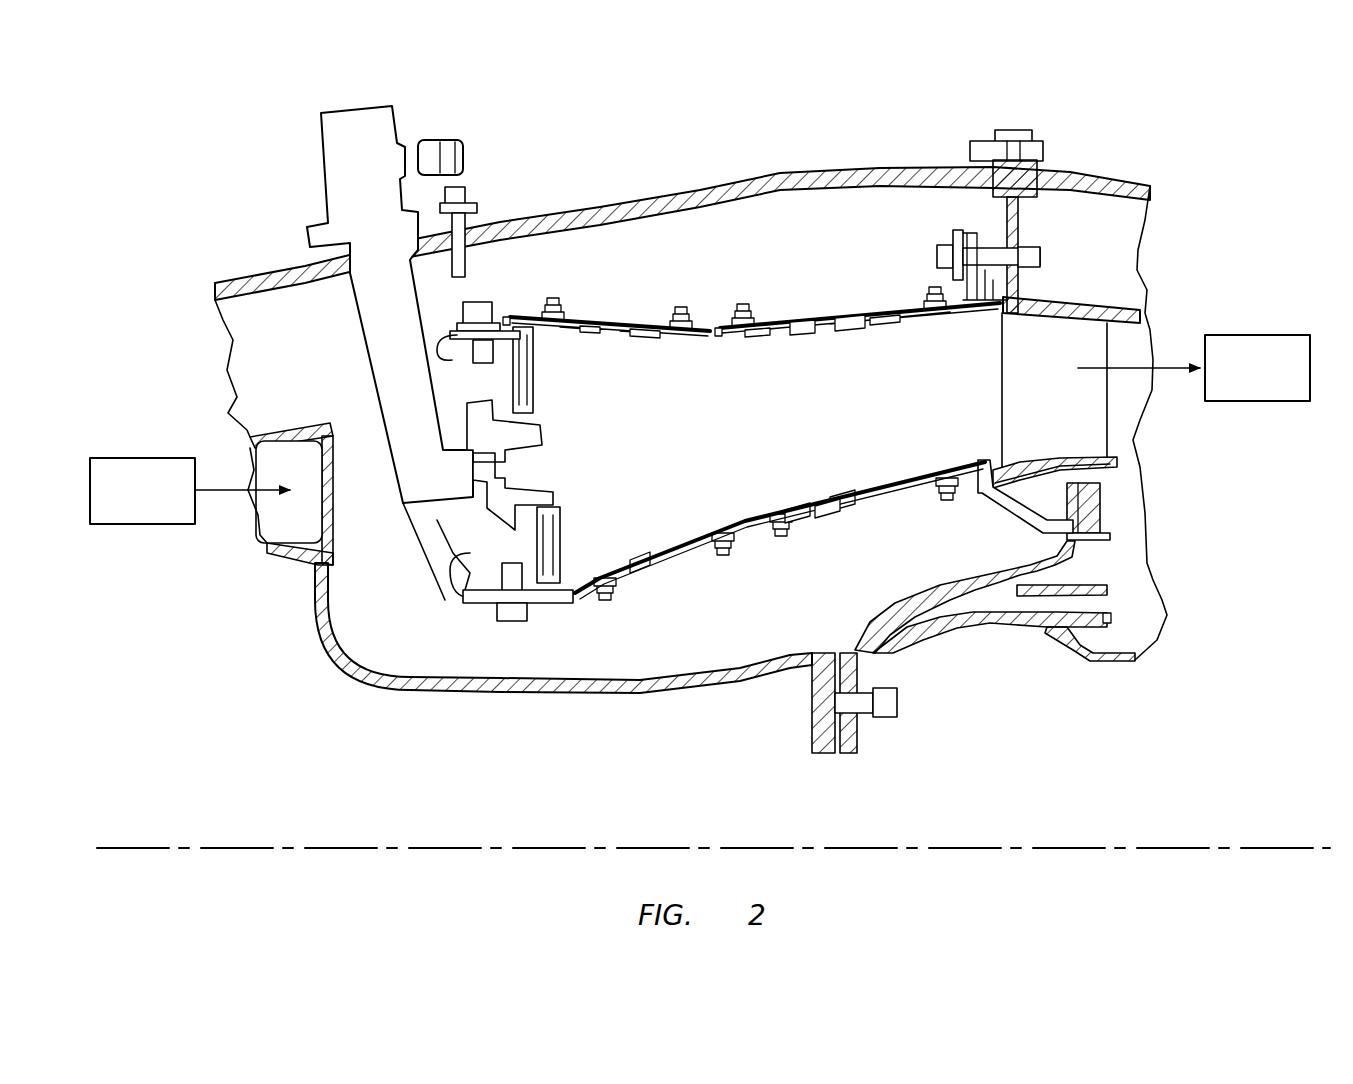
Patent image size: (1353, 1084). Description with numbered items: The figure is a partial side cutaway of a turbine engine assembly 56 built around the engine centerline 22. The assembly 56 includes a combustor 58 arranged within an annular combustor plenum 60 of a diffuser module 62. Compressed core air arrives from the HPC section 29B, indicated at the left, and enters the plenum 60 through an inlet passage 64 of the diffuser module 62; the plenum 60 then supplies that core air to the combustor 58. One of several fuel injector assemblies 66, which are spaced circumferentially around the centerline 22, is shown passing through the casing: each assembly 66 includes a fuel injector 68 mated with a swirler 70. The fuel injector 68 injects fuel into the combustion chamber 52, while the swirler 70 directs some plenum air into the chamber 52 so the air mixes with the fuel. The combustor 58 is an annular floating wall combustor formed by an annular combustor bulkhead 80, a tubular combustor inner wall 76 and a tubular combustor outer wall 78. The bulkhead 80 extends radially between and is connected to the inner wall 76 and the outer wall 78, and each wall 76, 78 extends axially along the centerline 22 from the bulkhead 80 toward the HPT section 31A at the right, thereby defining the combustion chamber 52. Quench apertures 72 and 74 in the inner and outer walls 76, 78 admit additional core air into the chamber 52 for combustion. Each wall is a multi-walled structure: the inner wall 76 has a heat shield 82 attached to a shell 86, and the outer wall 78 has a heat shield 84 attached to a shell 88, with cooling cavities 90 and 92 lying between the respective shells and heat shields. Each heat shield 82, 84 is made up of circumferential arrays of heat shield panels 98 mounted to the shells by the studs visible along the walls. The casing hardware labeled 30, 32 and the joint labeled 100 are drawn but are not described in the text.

The centerline 22 is at (1074, 845).
The HPC section 29B is at (172, 506).
The combustor section 30 is at (842, 151).
The HPT section 31A is at (1284, 384).
The fastener assembly 32 is at (1072, 160).
The combustion chamber 52 is at (782, 451).
The turbine engine assembly 56 is at (638, 150).
The combustor 58 is at (612, 311).
The combustor plenum 60 is at (862, 229).
The diffuser module 62 is at (316, 628).
The inlet passage 64 is at (275, 510).
The fuel injector assembly 66 is at (421, 523).
The fuel injector 68 is at (323, 170).
The swirler 70 is at (554, 482).
The quench aperture 72 is at (825, 512).
The quench aperture 74 is at (802, 321).
The combustor inner wall 76 is at (691, 570).
The combustor outer wall 78 is at (888, 296).
The combustor bulkhead 80 is at (540, 566).
The heat shield 82 is at (881, 492).
The heat shield 84 is at (840, 327).
The shell 86 is at (884, 503).
The shell 88 is at (673, 317).
The cooling cavity 90 is at (933, 478).
The cooling cavity 92 is at (636, 335).
The heat shield panel 98 is at (589, 333).
The panel joint 100 is at (762, 323).